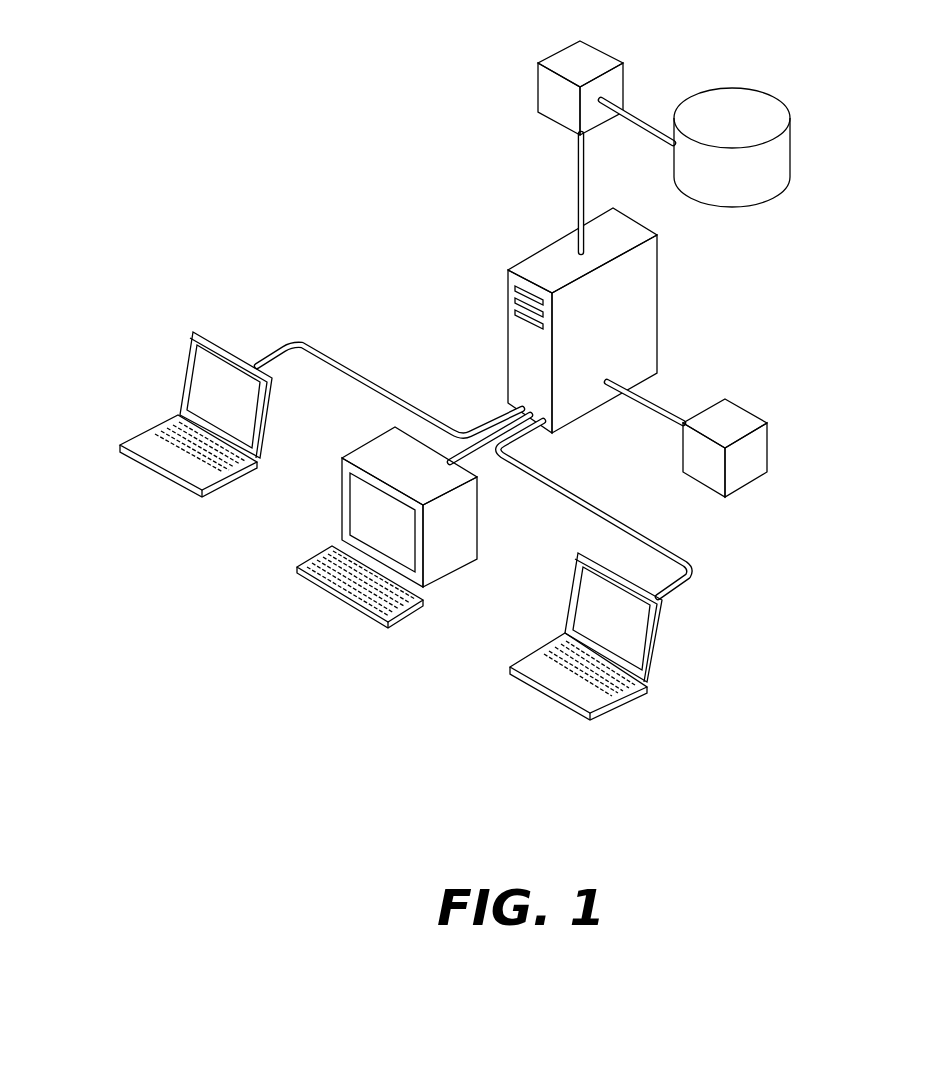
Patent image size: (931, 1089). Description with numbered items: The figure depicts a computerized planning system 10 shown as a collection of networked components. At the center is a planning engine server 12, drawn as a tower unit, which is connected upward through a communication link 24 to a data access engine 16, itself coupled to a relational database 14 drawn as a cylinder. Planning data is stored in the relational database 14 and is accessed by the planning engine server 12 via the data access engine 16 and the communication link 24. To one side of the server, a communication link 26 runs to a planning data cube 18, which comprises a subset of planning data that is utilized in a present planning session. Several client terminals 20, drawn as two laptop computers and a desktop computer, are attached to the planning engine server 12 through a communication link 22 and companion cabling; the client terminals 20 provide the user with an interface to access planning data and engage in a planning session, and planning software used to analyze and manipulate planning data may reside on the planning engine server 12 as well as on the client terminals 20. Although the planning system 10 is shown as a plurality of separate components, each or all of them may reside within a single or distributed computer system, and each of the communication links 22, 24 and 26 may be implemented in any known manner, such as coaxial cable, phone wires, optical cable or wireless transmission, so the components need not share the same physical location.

The planning system 10 is at (237, 52).
The planning engine server 12 is at (630, 306).
The relational database 14 is at (716, 192).
The data access engine 16 is at (548, 92).
The planning data cube 18 is at (757, 453).
The client terminals 20 is at (122, 472).
The communication link 22 is at (381, 386).
The communication link 24 is at (577, 175).
The communication link 26 is at (662, 413).